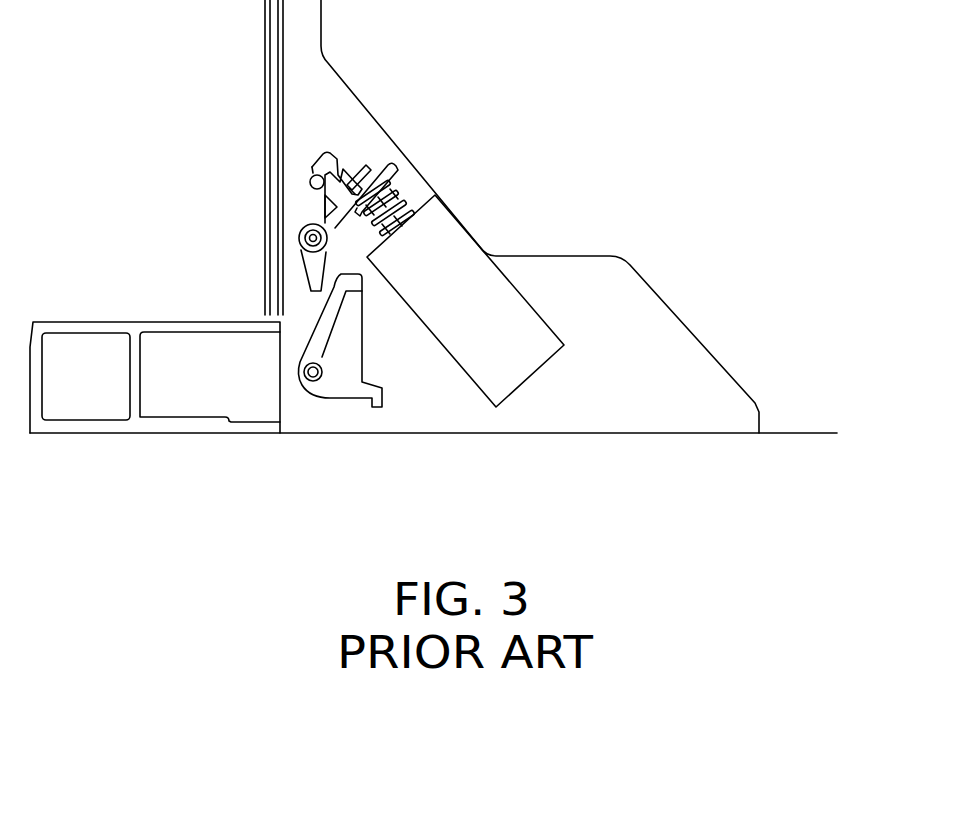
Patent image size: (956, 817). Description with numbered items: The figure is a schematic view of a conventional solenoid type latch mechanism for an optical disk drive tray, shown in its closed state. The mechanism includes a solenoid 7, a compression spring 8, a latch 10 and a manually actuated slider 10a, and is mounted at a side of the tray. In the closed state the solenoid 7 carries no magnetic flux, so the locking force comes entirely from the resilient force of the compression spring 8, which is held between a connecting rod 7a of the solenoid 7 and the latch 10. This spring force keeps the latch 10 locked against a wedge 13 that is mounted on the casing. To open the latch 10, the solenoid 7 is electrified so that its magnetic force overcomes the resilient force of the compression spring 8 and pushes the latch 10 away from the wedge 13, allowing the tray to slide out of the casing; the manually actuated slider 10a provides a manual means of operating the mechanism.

The solenoid 7 is at (462, 263).
The connecting rod 7a is at (428, 207).
The compression spring 8 is at (418, 212).
The latch 10 is at (310, 163).
The manually actuated slider 10a is at (343, 397).
The wedge 13 is at (310, 187).